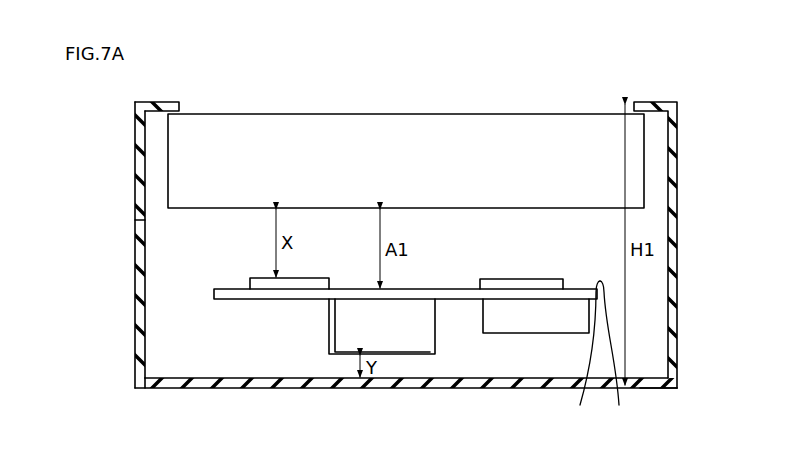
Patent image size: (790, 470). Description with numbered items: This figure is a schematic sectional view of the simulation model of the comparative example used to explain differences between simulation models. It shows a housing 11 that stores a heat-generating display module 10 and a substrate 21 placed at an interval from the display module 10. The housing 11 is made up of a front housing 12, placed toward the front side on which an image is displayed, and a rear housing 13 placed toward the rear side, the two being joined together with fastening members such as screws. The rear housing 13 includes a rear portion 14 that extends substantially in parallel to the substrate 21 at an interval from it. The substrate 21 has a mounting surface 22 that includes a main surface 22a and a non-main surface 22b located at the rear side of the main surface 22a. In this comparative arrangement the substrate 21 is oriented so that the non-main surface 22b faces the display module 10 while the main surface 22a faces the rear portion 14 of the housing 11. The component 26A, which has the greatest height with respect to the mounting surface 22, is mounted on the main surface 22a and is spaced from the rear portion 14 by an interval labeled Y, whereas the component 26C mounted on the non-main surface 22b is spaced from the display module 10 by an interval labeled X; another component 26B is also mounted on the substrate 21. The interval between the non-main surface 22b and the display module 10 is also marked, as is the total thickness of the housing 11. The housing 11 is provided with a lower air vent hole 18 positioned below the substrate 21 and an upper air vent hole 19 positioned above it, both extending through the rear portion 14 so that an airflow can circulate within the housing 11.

The display module 10 is at (233, 135).
The housing 11 is at (86, 192).
The front housing 12 is at (138, 192).
The rear housing 13 is at (138, 246).
The rear portion 14 is at (341, 384).
The lower air vent hole 18 is at (638, 390).
The upper air vent hole 19 is at (202, 382).
The substrate 21 is at (292, 294).
The mounting surface 22 is at (597, 373).
The main surface 22a is at (581, 356).
The non-main surface 22b is at (618, 356).
The component 26A is at (410, 342).
The component 26B is at (537, 322).
The component 26C is at (317, 280).